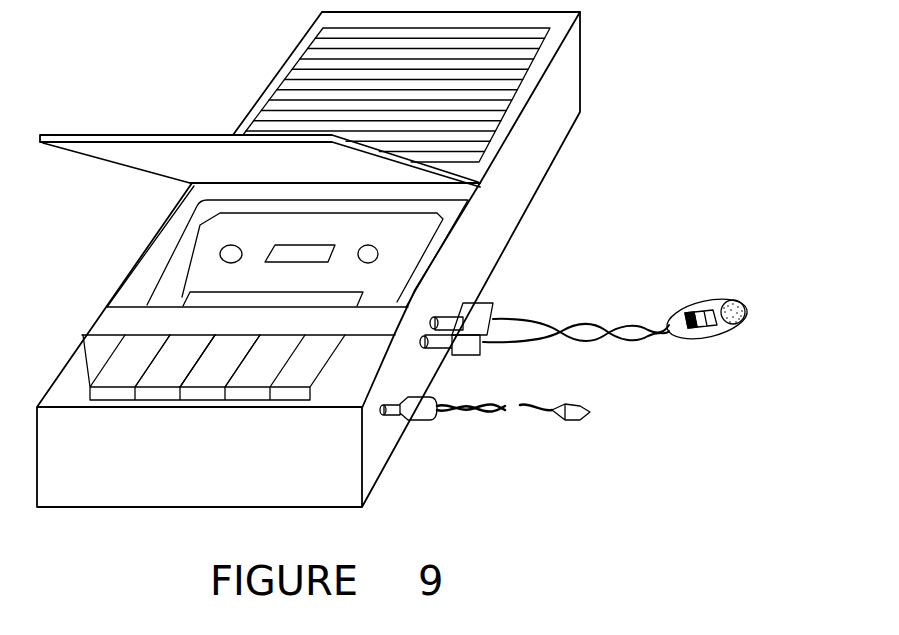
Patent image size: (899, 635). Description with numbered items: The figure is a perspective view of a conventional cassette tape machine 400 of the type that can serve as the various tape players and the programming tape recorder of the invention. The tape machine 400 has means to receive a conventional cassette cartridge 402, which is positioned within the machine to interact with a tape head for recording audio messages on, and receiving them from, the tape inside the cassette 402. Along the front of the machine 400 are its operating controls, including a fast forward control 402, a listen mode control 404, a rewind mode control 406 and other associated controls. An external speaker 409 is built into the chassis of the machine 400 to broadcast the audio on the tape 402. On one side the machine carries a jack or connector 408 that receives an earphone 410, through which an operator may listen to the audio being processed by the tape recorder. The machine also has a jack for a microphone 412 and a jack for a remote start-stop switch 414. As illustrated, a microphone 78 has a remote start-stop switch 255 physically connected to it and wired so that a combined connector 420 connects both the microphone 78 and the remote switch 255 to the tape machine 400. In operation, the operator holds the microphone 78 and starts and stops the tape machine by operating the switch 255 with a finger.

The tape machine 400 is at (510, 207).
The cassette cartridge 402 is at (420, 255).
The listen mode control 404 is at (167, 380).
The rewind mode control 406 is at (220, 380).
The jack or connector 408 is at (385, 420).
The external speaker 409 is at (522, 68).
The earphone 410 is at (490, 415).
The microphone jack 412 is at (427, 345).
The remote start-stop switch jack 414 is at (437, 316).
The combined connector 420 is at (493, 306).
The remote start-stop switch 255 is at (675, 313).
The microphone 78 is at (703, 335).